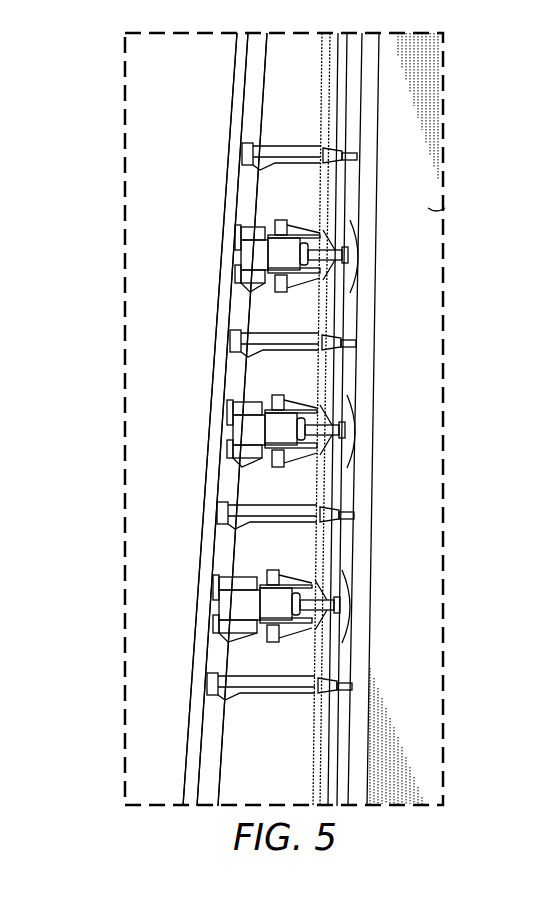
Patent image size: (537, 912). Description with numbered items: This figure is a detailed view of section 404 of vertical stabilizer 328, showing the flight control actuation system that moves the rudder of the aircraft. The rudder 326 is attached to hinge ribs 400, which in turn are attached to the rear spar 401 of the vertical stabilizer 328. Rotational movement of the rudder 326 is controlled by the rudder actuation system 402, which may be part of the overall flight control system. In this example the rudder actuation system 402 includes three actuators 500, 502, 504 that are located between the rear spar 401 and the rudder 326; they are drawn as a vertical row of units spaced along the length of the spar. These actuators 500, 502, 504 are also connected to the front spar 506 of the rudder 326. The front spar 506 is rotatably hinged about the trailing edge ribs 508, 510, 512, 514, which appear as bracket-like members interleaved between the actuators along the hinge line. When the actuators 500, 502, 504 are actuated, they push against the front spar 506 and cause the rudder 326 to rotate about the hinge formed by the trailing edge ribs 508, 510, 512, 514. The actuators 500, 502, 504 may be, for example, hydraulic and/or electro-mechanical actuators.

The section 404 is at (118, 221).
The rudder actuation system 402 is at (205, 170).
The vertical stabilizer 328 is at (222, 207).
The rear spar 401 is at (221, 367).
The hinge ribs 400 is at (209, 606).
The rudder 326 is at (428, 209).
The front spar 506 is at (360, 545).
The trailing edge rib 508 is at (297, 145).
The trailing edge rib 510 is at (262, 333).
The trailing edge rib 512 is at (255, 503).
The trailing edge rib 514 is at (272, 693).
The actuator 500 is at (280, 262).
The actuator 502 is at (275, 433).
The actuator 504 is at (275, 606).